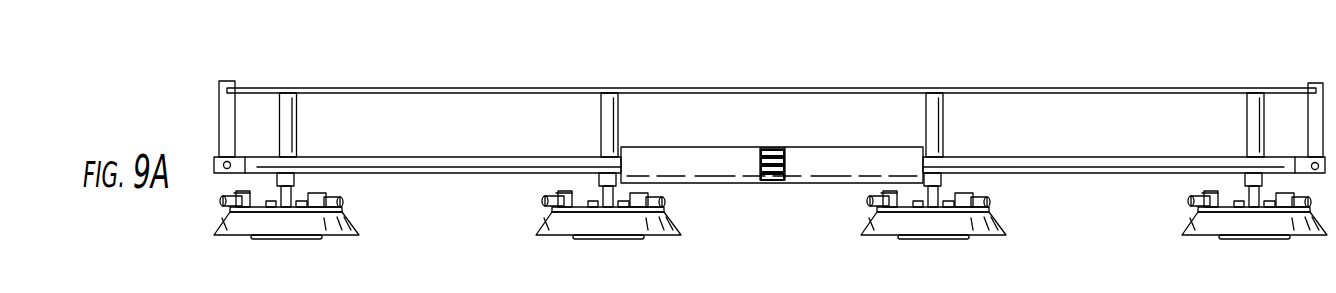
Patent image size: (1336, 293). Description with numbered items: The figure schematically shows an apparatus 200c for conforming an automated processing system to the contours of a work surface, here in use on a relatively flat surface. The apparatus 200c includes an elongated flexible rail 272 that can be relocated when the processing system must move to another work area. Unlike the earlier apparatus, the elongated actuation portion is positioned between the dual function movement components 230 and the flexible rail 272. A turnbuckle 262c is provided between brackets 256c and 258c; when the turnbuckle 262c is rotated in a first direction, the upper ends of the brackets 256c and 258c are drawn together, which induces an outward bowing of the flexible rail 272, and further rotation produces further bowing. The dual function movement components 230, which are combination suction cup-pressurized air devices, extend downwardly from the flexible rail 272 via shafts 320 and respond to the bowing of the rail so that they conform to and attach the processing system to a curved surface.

The apparatus 200c is at (753, 68).
The flexible rail 272 is at (1111, 92).
The bracket 258c is at (223, 118).
The bracket 256c is at (1316, 118).
The shaft 320 is at (943, 122).
The turnbuckle 262c is at (702, 173).
The dual function movement component 230 is at (1007, 235).